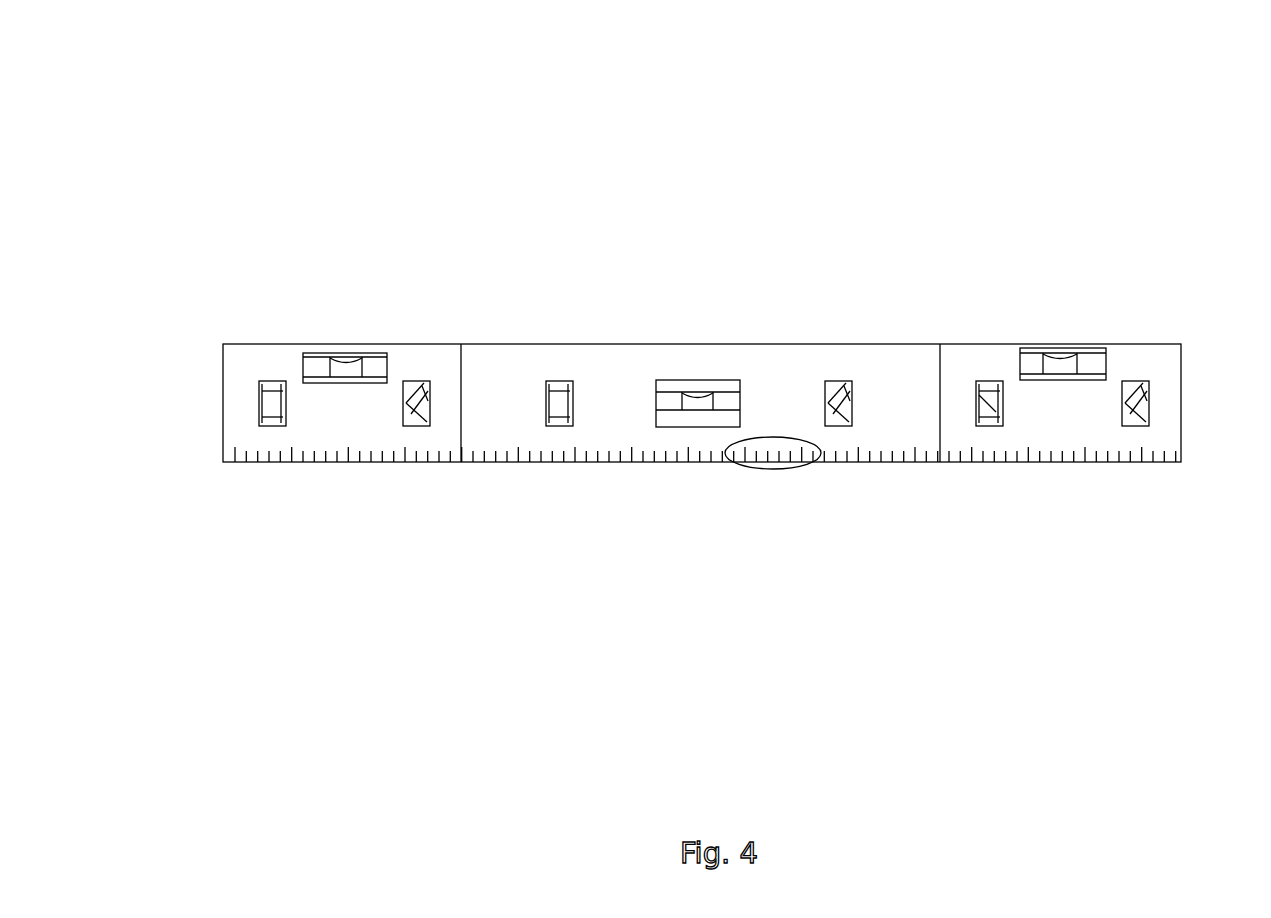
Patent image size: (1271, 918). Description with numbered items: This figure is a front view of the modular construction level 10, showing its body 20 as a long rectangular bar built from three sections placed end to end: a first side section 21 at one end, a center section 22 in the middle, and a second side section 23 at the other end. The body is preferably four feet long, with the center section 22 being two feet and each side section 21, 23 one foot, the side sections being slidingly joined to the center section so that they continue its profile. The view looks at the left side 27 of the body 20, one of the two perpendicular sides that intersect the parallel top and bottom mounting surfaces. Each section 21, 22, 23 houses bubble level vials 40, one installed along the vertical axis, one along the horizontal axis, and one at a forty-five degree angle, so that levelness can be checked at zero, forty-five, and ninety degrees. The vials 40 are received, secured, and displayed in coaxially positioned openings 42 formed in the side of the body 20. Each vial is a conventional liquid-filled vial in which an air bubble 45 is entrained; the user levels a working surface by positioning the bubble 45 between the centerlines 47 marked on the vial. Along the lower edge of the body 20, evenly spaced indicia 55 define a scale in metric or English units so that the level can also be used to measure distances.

The modular construction level 10 is at (1152, 134).
The body 20 is at (704, 314).
The first side section 21 is at (440, 348).
The center section 22 is at (517, 360).
The second side section 23 is at (1163, 357).
The left side 27 is at (484, 447).
The bubble level vial 40 is at (313, 362).
The opening 42 is at (283, 424).
The air bubble 45 is at (344, 360).
The centerline 47 is at (283, 422).
The indicia 55 is at (773, 470).